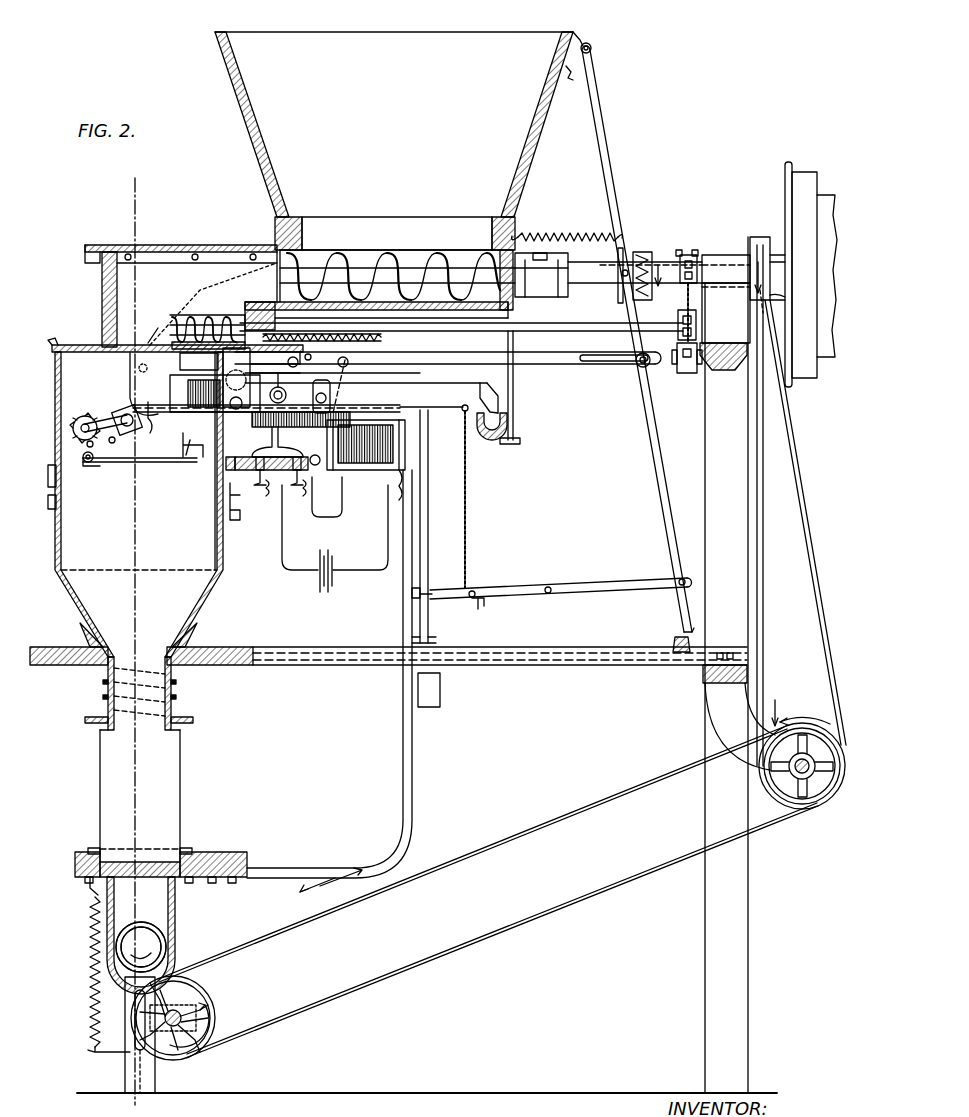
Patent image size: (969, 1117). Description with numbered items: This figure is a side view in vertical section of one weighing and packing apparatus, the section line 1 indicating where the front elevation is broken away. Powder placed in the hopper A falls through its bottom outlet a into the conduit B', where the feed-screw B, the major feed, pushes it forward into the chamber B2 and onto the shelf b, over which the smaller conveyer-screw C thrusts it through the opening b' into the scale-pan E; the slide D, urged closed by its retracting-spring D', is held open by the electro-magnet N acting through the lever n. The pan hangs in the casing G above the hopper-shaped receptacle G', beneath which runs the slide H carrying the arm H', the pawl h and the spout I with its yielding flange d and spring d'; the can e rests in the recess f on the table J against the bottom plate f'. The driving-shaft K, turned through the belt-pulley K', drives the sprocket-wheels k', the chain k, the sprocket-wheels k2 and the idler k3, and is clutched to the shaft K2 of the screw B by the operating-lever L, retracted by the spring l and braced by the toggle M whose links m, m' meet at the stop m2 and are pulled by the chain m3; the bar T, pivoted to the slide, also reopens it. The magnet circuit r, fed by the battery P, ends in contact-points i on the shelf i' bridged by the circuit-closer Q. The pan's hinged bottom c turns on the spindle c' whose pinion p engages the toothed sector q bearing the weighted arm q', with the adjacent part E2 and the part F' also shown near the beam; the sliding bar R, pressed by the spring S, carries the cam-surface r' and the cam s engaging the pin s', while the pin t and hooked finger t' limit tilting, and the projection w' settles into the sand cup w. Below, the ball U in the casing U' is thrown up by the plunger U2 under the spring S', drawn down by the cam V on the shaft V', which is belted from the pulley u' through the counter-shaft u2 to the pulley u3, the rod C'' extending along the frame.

The section line 1 is at (152, 193).
The hopper A is at (394, 124).
The bottom outlet a is at (397, 233).
The feed-screw B is at (397, 276).
The conduit B' is at (376, 306).
The chamber B2 is at (181, 296).
The shelf b is at (213, 304).
The opening b' is at (141, 329).
The conveyer-screw C is at (207, 322).
The shaft rod C'' is at (461, 316).
The slide D is at (174, 383).
The retracting-spring D' is at (280, 363).
The scale-pan E is at (258, 380).
The armature block E2 is at (129, 407).
The frame bar F' is at (371, 393).
The casing G is at (168, 497).
The receptacle G' is at (139, 671).
The slide H is at (402, 708).
The arm H' is at (419, 558).
The spout I is at (172, 706).
The table J is at (161, 853).
The driving-shaft K is at (725, 301).
The belt-pulley K' is at (803, 266).
The shaft K2 is at (601, 281).
The chain k is at (694, 285).
The sprocket-wheels k' is at (687, 239).
The sprocket-wheels k2 is at (686, 358).
The idler sprocket-wheel k3 is at (688, 374).
The operating-lever L is at (605, 182).
The retracting-spring l is at (567, 226).
The toggle-brace M is at (561, 576).
The toggle-link m is at (625, 571).
The toggle-link m' is at (436, 600).
The stop m2 is at (491, 607).
The chain m3 is at (479, 496).
The electro-magnet N is at (366, 434).
The lever n is at (341, 378).
The battery P is at (333, 568).
The circuit-closer Q is at (277, 450).
The toothed sector q is at (362, 342).
The weighted arm q' is at (98, 413).
The sliding bar R is at (300, 393).
The electric circuit r is at (309, 523).
The cam-surface r' is at (148, 419).
The spring S is at (277, 439).
The spring S' is at (102, 964).
The cam-surface s is at (126, 445).
The pin s' is at (104, 450).
The bar T is at (553, 364).
The pin t is at (193, 440).
The hooked finger t' is at (182, 459).
The ball U is at (141, 935).
The casing U' is at (383, 662).
The plunger U2 is at (125, 997).
The pulley u' is at (789, 495).
The counter-shaft u2 is at (802, 755).
The pulley u3 is at (225, 1050).
The cam V is at (173, 1018).
The shaft V' is at (185, 1014).
The cup w is at (509, 423).
The projection w' is at (512, 398).
The hinged bottom c is at (140, 468).
The spindle c' is at (91, 477).
The flange d is at (124, 711).
The spring d' is at (121, 688).
The can e is at (149, 796).
The recess f is at (192, 837).
The bottom plate f' is at (128, 837).
The pawl h is at (675, 640).
The contact-points i is at (280, 480).
The shelf i' is at (237, 455).
The pinion p is at (80, 462).